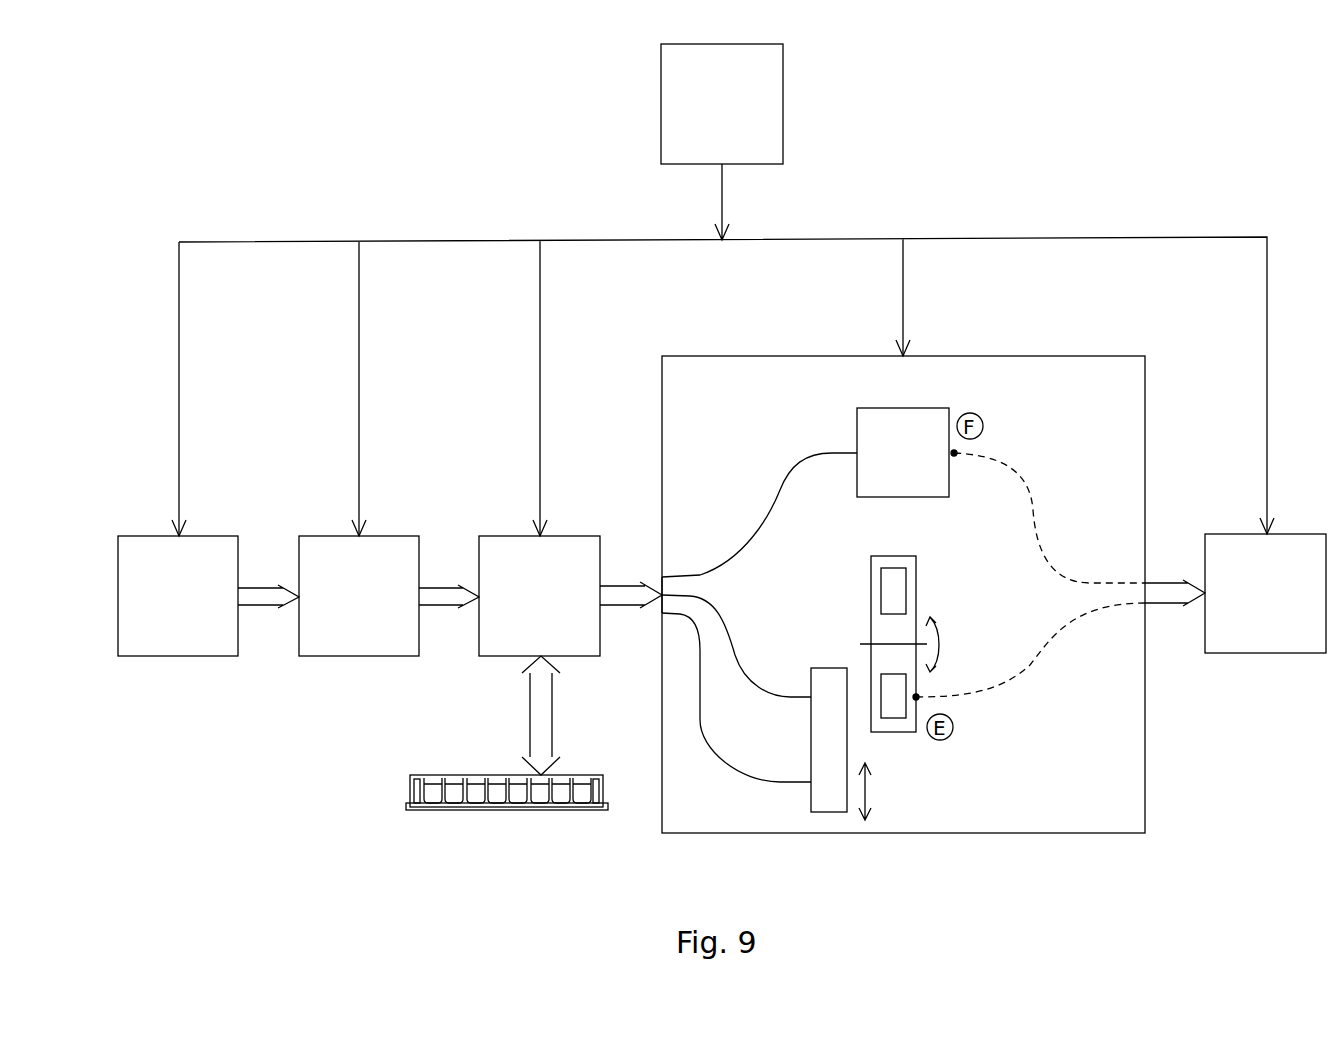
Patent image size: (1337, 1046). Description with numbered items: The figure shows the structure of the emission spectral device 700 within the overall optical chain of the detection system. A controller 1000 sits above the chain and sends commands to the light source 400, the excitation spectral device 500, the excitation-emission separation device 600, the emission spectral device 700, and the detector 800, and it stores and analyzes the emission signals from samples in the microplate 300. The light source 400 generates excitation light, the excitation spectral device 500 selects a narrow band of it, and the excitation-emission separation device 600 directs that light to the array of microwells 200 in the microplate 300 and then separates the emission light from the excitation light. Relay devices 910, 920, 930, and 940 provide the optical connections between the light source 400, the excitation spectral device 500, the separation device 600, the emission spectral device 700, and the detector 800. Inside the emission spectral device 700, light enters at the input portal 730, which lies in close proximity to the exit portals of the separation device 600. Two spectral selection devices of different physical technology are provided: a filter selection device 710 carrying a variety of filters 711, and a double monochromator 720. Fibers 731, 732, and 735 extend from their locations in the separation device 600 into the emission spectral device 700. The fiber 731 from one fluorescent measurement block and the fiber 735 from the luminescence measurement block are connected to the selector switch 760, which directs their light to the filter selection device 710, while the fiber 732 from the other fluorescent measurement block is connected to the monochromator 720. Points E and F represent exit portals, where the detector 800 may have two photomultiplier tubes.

The controller 1000 is at (722, 142).
The light source 400 is at (178, 596).
The excitation spectral device 500 is at (359, 596).
The excitation-emission separation device 600 is at (539, 596).
The detector 800 is at (1265, 593).
The emission spectral device 700 is at (1050, 833).
The double monochromator 720 is at (857, 413).
The fiber 732 is at (787, 477).
The fiber 731 is at (735, 657).
The fiber 735 is at (748, 773).
The input portal 730 is at (662, 613).
The filter selection device 710 is at (916, 573).
The filters 711 is at (881, 572).
The selector switch 760 is at (838, 812).
The microwells 200 is at (435, 782).
The microplate 300 is at (411, 808).
The relay device 910 is at (268, 617).
The relay device 920 is at (449, 617).
The relay device 930 is at (631, 572).
The relay device 940 is at (1175, 614).